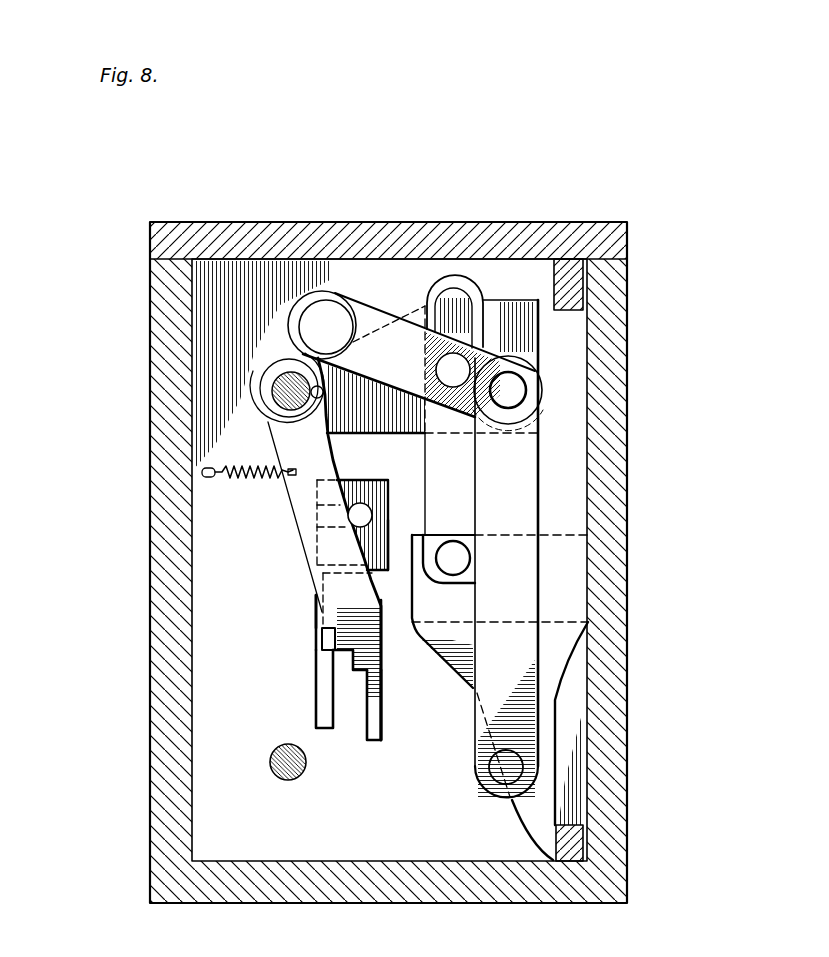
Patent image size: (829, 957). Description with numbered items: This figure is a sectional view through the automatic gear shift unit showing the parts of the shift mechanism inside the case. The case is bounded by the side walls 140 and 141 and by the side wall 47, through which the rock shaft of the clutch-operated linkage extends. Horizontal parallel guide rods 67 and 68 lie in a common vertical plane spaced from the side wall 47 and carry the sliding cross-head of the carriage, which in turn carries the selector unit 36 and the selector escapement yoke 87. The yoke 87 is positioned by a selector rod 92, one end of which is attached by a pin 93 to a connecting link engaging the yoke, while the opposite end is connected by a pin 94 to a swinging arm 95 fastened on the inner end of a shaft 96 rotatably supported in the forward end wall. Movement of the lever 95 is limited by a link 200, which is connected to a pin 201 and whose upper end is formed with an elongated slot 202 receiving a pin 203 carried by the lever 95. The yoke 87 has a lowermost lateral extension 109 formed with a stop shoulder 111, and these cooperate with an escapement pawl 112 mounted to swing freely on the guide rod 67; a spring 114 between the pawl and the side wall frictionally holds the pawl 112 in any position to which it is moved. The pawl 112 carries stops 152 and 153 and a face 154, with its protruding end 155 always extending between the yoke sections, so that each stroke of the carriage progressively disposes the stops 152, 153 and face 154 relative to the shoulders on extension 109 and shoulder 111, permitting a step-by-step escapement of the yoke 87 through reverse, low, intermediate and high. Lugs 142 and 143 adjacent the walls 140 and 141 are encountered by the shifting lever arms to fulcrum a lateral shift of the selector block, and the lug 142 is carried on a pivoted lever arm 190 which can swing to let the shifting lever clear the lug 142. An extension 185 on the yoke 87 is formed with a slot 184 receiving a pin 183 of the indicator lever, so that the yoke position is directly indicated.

The side wall of case 141 is at (428, 232).
The side wall of case 140 is at (413, 890).
The lug 143 is at (577, 293).
The lug 142 is at (572, 840).
The side wall of case 47 is at (570, 780).
The guide rod 67 is at (297, 403).
The shaft 96 is at (340, 315).
The swinging arm 95 is at (410, 364).
The elongated slot 202 is at (460, 292).
The selector rod 92 is at (537, 500).
The pin 94 is at (507, 388).
The pin 203 is at (438, 387).
The link 200 is at (450, 450).
The pin 93 is at (483, 780).
The selector escapement yoke 87 is at (380, 575).
The slot 184 is at (347, 510).
The pin 183 is at (361, 512).
The extension 185 is at (385, 533).
The lever arm 190 is at (463, 665).
The pin 201 is at (455, 560).
The face of pawl 154 is at (323, 613).
The escapement pawl 112 is at (297, 478).
The spring 114 is at (208, 478).
The selector unit 36 is at (310, 703).
The stop 153 is at (330, 668).
The protruding end of pawl 155 is at (372, 733).
The stop 152 is at (382, 676).
The stop shoulder 111 is at (322, 638).
The lateral extension 109 is at (318, 628).
The guide rod 68 is at (278, 768).